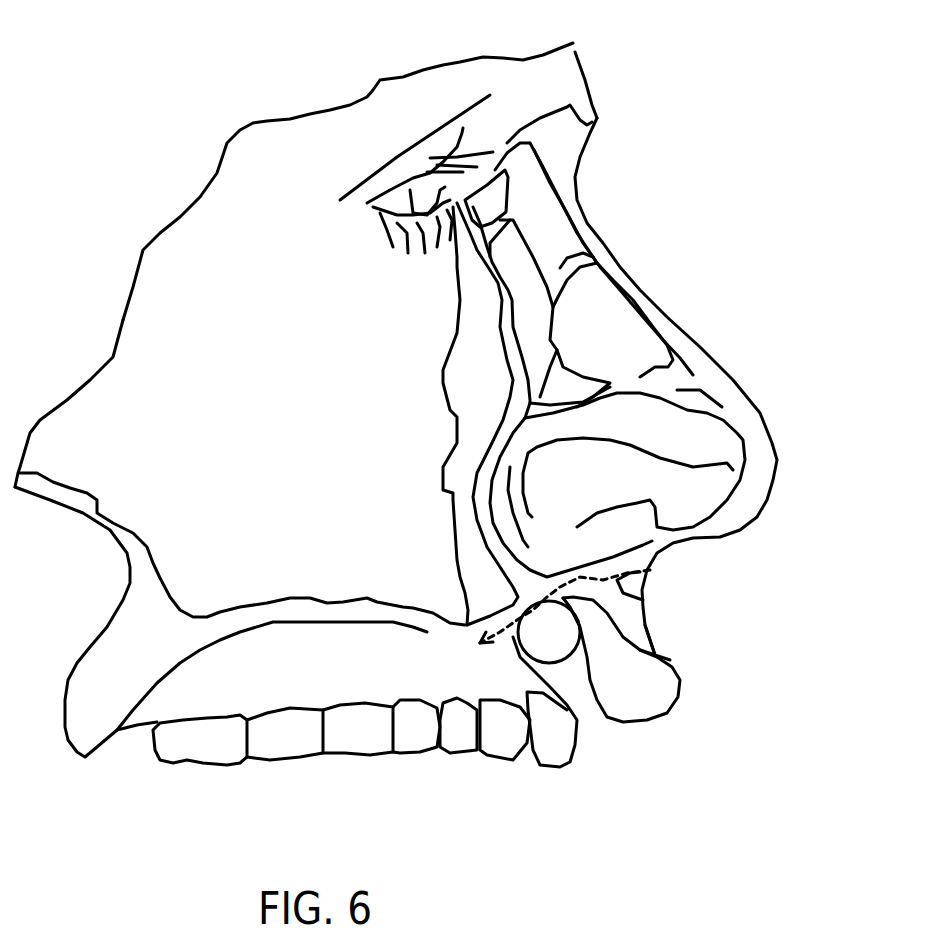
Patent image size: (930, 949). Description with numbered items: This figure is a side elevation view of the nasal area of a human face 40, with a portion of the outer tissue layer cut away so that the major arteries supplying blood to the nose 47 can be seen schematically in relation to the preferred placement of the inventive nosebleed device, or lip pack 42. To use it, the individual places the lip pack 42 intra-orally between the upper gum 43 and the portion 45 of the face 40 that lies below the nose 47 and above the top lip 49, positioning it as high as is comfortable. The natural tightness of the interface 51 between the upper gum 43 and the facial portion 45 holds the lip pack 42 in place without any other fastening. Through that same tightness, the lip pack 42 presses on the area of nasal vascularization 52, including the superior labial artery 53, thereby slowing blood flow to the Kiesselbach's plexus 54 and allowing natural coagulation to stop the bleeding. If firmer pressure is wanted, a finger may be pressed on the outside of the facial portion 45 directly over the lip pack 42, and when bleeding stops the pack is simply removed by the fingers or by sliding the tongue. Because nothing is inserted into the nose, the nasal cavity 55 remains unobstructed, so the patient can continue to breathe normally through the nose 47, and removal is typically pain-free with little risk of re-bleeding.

The human face 40 is at (163, 113).
The nosebleed device/lip pack 42 is at (568, 648).
The upper gum 43 is at (472, 682).
The portion of the face below the nose 45 is at (643, 593).
The nose 47 is at (737, 380).
The top lip 49 is at (660, 703).
The interface 51 is at (657, 652).
The area of nasal vascularization 52 is at (505, 378).
The superior labial artery 53 is at (643, 590).
The Kiesselbach's plexus 54 is at (612, 273).
The nasal cavity 55 is at (680, 498).